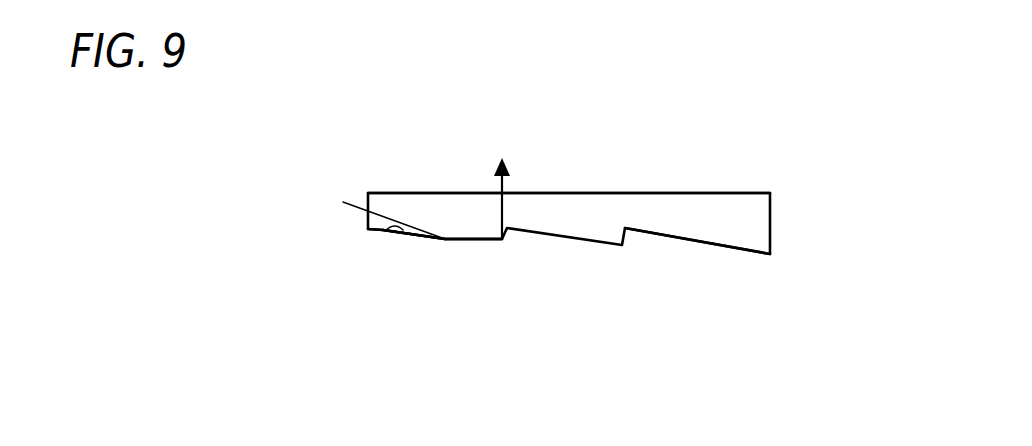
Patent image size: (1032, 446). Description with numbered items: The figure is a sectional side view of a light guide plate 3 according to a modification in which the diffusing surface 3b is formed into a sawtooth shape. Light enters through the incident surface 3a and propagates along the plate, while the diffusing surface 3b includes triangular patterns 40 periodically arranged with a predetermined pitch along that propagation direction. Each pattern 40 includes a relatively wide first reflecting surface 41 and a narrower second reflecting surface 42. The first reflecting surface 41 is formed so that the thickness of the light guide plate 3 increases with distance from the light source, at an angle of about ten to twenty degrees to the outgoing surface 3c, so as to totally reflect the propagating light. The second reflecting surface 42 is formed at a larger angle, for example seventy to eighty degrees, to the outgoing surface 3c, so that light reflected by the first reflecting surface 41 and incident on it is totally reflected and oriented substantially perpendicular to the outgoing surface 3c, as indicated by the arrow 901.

The light guide plate 3 is at (811, 311).
The incident surface 3a is at (366, 219).
The diffusing surface 3b is at (723, 251).
The outgoing surface 3c is at (758, 192).
The triangular pattern 40 is at (490, 353).
The first reflecting surface 41 is at (381, 231).
The second reflecting surface 42 is at (498, 241).
The arrow 901 is at (504, 184).